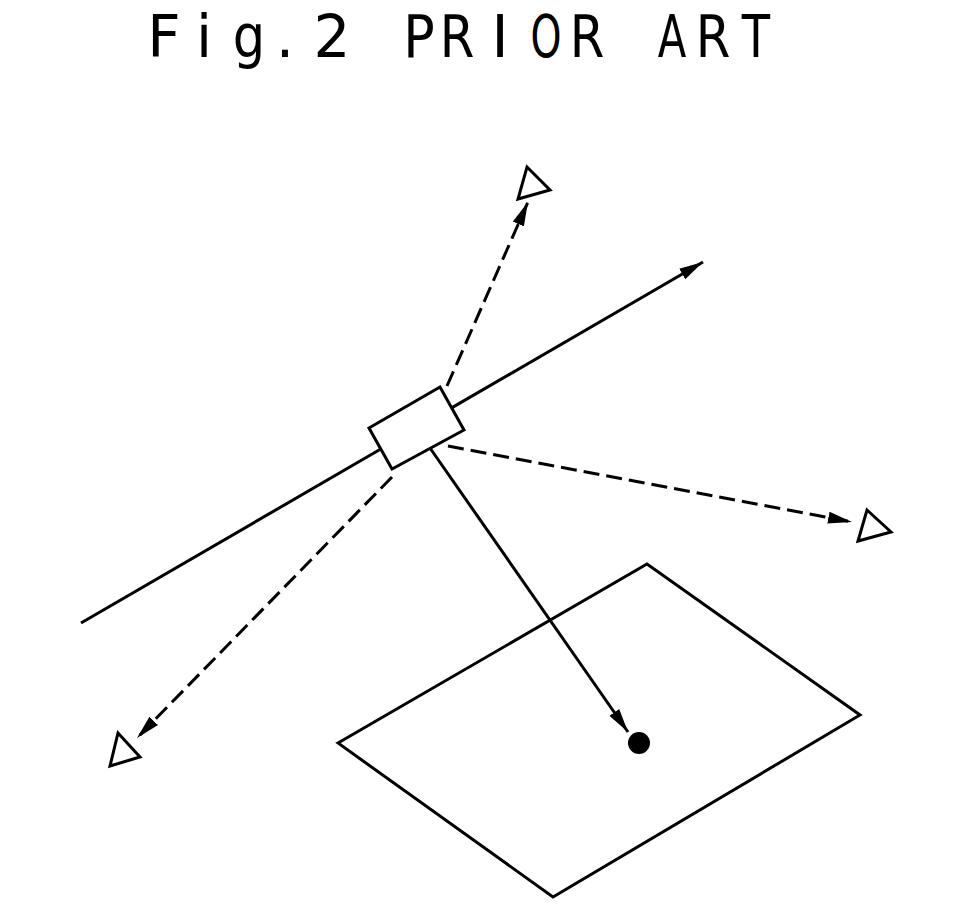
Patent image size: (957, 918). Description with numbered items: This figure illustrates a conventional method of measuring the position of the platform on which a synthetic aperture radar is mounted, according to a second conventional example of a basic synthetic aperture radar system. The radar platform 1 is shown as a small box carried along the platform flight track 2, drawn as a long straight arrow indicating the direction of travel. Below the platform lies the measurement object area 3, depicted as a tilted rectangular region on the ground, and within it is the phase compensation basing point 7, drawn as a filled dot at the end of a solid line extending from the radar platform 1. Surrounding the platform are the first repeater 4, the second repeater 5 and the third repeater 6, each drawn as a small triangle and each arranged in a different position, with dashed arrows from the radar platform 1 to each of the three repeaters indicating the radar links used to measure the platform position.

The radar platform 1 is at (402, 409).
The platform flight track 2 is at (628, 305).
The measurement object area 3 is at (815, 745).
The first repeater 4 is at (112, 757).
The second repeater 5 is at (885, 523).
The third repeater 6 is at (551, 185).
The phase compensation basing point 7 is at (640, 755).